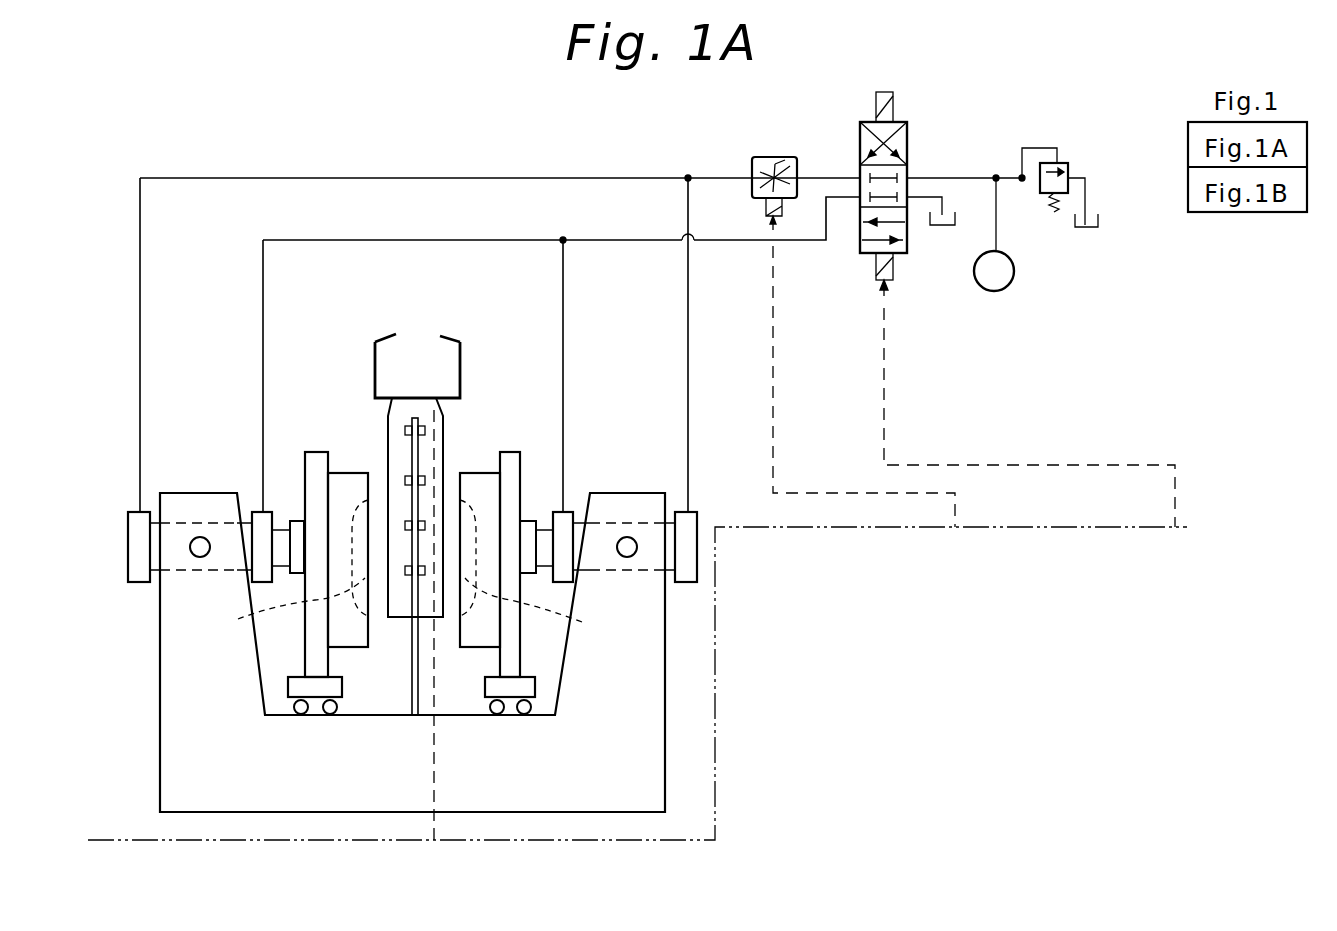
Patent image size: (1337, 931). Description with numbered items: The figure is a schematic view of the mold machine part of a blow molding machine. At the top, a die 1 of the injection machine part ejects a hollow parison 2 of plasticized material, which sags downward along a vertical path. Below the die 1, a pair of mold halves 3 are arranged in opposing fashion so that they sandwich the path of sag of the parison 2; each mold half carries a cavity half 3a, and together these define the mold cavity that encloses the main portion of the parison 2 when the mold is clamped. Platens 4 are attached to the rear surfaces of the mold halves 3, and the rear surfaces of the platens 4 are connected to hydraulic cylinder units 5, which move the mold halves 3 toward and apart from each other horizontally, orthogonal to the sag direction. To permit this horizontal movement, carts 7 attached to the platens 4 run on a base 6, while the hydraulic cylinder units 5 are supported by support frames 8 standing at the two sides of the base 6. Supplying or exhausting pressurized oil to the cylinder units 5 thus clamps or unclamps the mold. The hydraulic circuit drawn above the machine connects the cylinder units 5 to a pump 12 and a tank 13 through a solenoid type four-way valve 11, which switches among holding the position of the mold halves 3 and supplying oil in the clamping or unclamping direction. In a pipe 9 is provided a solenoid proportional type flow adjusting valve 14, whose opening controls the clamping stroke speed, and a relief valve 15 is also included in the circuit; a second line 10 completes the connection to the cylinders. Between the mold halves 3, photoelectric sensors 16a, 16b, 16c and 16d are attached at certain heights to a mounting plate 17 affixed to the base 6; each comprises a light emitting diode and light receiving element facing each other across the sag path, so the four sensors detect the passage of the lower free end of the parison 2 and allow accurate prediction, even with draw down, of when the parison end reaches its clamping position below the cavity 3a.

The die 1 is at (462, 352).
The hollow parison 2 is at (444, 416).
The mold halves 3 is at (476, 473).
The cavity half 3a is at (408, 568).
The platens 4 is at (306, 473).
The hydraulic cylinder units 5 is at (136, 512).
The base 6 is at (170, 764).
The carts 7 is at (298, 686).
The support frames 8 is at (198, 494).
The pipe 9 is at (400, 180).
The pressure line 10 is at (400, 242).
The solenoid type four-way valve 11 is at (908, 137).
The pump 12 is at (994, 291).
The tank 13 is at (942, 226).
The solenoid proportional type flow adjusting valve 14 is at (770, 157).
The relief valve 15 is at (1070, 158).
The photoelectric sensor 16a is at (408, 430).
The photoelectric sensor 16b is at (408, 480).
The photoelectric sensor 16c is at (408, 525).
The photoelectric sensor 16d is at (408, 570).
The mounting plate 17 is at (412, 675).